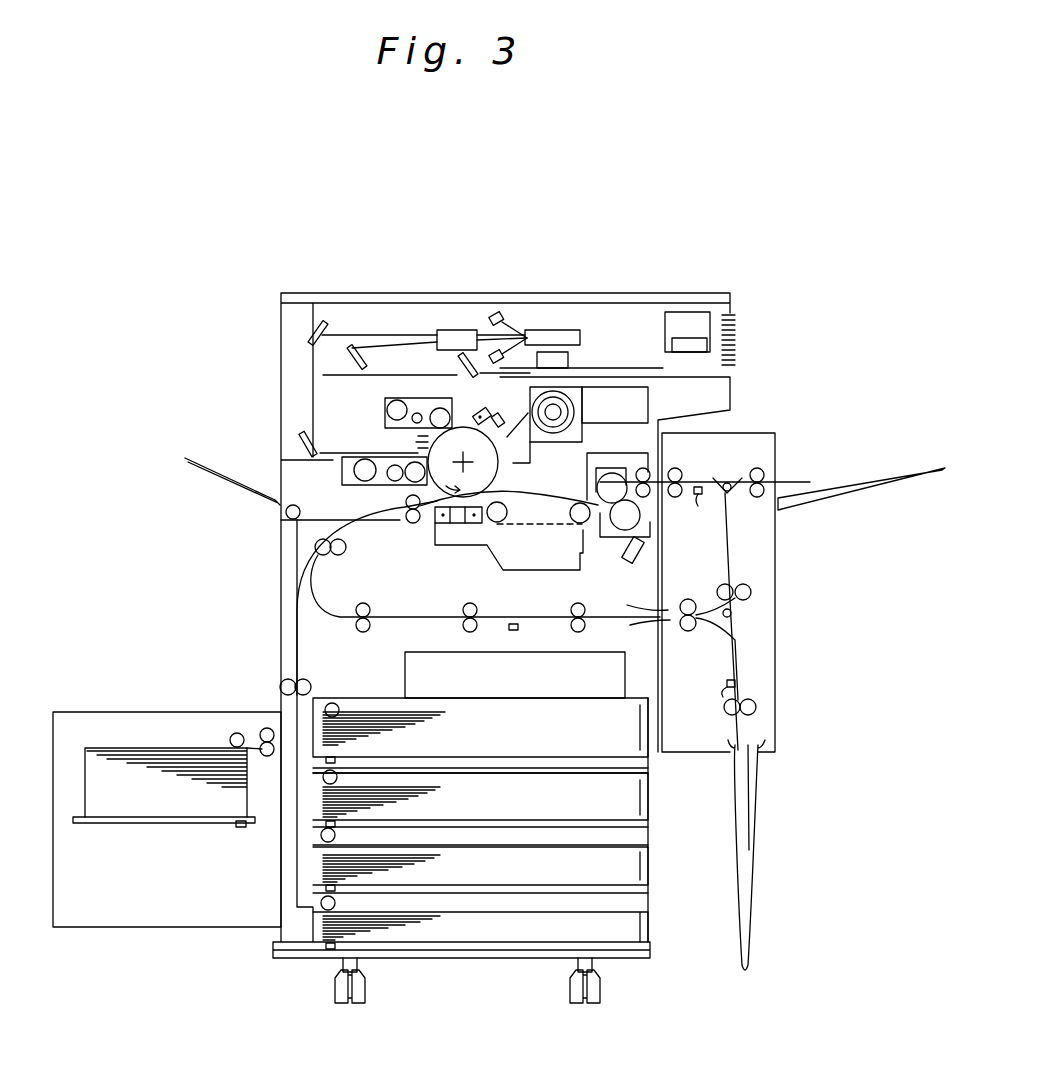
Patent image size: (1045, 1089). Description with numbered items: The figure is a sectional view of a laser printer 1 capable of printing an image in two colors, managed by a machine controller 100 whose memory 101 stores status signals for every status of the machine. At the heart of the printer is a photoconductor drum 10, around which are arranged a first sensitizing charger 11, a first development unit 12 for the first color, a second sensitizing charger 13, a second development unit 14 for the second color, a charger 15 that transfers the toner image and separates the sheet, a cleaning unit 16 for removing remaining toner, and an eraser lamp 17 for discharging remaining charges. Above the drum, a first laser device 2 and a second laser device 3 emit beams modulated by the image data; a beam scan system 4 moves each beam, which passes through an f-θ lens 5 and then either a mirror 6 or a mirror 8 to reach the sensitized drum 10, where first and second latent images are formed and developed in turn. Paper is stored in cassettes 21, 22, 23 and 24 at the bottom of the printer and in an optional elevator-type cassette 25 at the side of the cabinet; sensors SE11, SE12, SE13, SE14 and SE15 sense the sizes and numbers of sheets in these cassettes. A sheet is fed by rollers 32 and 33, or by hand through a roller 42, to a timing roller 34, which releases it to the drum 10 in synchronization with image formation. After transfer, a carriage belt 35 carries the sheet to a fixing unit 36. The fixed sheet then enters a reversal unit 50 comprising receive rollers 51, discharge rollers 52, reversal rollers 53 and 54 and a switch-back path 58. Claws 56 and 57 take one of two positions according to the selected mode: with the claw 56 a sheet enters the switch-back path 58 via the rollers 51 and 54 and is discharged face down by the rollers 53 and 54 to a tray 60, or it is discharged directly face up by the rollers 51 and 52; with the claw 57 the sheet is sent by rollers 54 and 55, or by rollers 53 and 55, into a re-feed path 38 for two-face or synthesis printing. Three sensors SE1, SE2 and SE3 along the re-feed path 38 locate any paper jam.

The laser printer 1 is at (283, 330).
The first laser device 2 is at (503, 350).
The second laser device 3 is at (496, 312).
The beam scan system 4 is at (556, 330).
The f-θ lens 5 is at (452, 330).
The mirror 6 is at (354, 345).
The mirror 8 is at (305, 320).
The photoconductor drum 10 is at (460, 426).
The first sensitizing charger 11 is at (478, 405).
The first development unit 12 is at (385, 402).
The second sensitizing charger 13 is at (417, 443).
The second development unit 14 is at (345, 490).
The charger 15 is at (450, 524).
The cleaning unit 16 is at (565, 400).
The eraser lamp 17 is at (545, 352).
The cassette 21 is at (553, 738).
The cassette 22 is at (547, 800).
The cassette 23 is at (545, 870).
The cassette 24 is at (500, 932).
The cassette of elevator type 25 is at (155, 823).
The roller 32 is at (290, 680).
The roller 33 is at (315, 547).
The timing roller 34 is at (422, 522).
The carriage belt 35 is at (522, 494).
The fixing unit 36 is at (612, 485).
The re-feed path 38 is at (618, 620).
The roller 42 is at (286, 512).
The reversal unit 50 is at (685, 745).
The receive rollers 51 is at (674, 478).
The discharge rollers 52 is at (760, 476).
The reversal rollers 53 is at (752, 592).
The reversal rollers 54 is at (756, 707).
The rollers 55 is at (686, 632).
The claw 56 is at (728, 488).
The claw 57 is at (735, 622).
The switch-back path 58 is at (746, 880).
The tray 60 is at (832, 505).
The machine controller 100 is at (690, 315).
The memory 101 is at (736, 335).
The sensor SE1 is at (513, 630).
The sensor SE2 is at (691, 512).
The sensor SE3 is at (700, 704).
The sensor SE11 is at (330, 758).
The sensor SE12 is at (335, 824).
The sensor SE13 is at (335, 888).
The sensor SE14 is at (330, 950).
The sensor SE15 is at (240, 828).